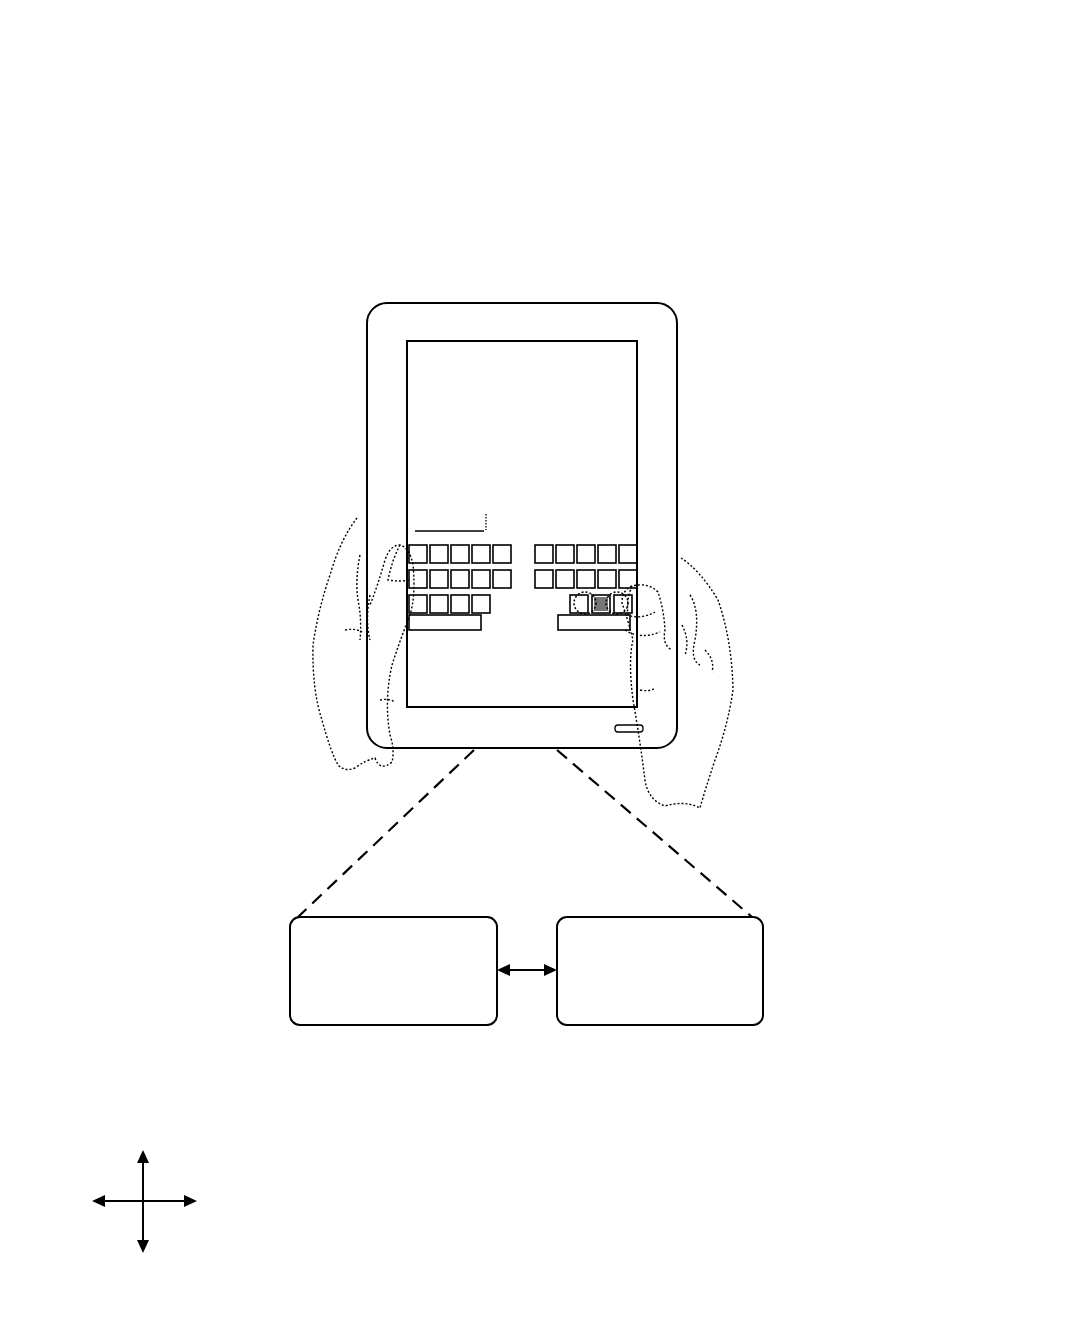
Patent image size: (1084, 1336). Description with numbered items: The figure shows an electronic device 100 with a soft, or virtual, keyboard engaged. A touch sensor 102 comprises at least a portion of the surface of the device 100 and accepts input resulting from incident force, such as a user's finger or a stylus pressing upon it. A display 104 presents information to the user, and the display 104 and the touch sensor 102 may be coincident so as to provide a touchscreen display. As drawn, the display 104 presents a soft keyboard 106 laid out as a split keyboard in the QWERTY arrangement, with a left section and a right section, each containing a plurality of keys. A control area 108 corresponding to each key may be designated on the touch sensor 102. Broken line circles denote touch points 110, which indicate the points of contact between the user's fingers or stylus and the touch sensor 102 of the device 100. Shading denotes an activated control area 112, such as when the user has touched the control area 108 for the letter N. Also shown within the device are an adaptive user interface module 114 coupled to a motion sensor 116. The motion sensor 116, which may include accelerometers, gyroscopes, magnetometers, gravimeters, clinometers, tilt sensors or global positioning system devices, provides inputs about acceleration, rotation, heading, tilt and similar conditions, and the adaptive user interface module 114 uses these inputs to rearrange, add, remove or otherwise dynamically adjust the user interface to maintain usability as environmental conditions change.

The electronic device 100 is at (792, 64).
The touch sensor 102 is at (618, 328).
The display 104 is at (446, 356).
The soft keyboard 106 is at (505, 599).
The control area 108 is at (473, 618).
The touch points 110 is at (705, 507).
The activated control area 112 is at (603, 606).
The adaptive user interface module 114 is at (375, 1005).
The motion sensor 116 is at (678, 991).